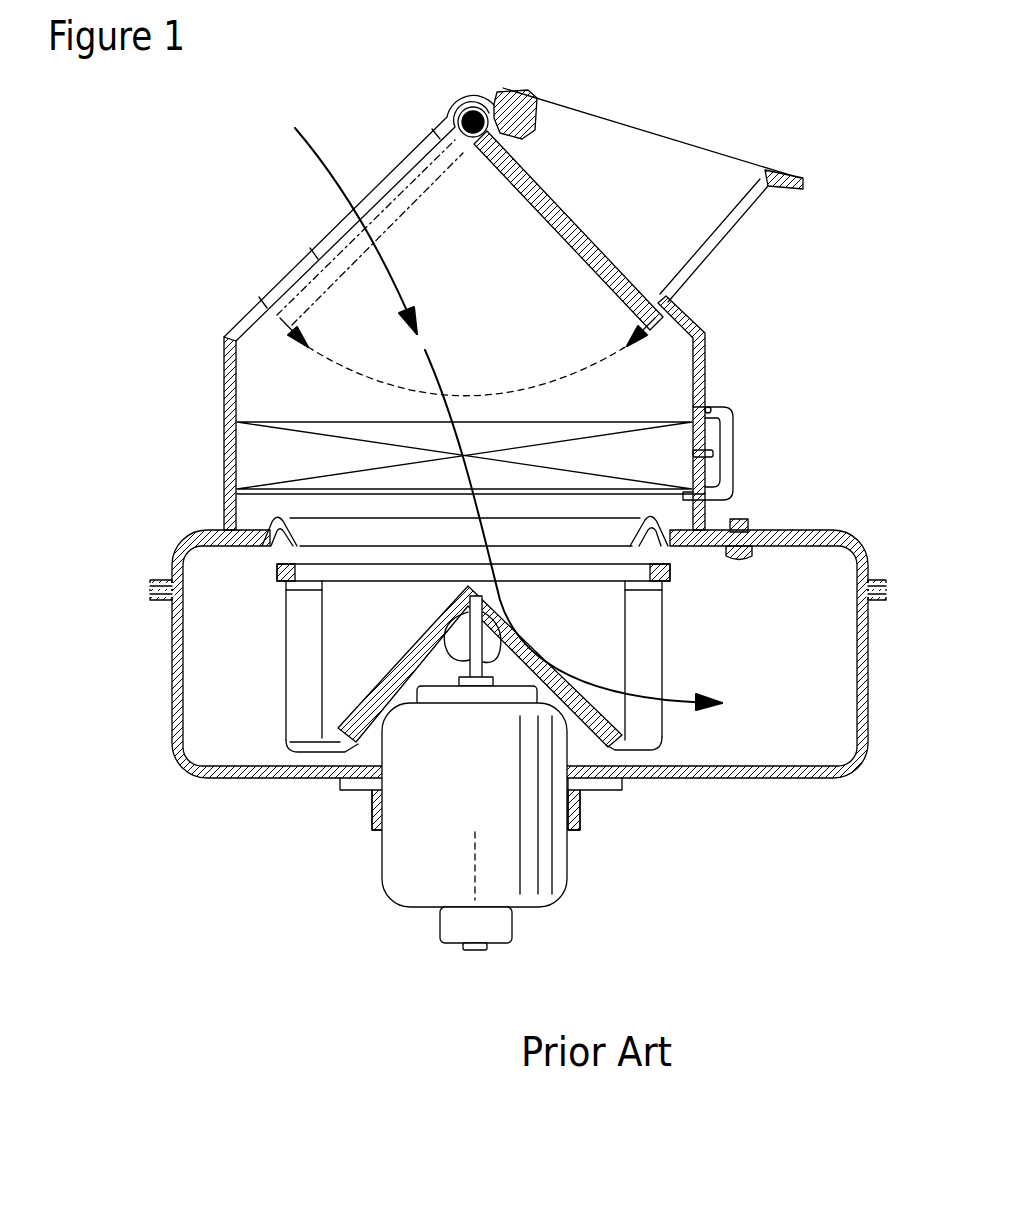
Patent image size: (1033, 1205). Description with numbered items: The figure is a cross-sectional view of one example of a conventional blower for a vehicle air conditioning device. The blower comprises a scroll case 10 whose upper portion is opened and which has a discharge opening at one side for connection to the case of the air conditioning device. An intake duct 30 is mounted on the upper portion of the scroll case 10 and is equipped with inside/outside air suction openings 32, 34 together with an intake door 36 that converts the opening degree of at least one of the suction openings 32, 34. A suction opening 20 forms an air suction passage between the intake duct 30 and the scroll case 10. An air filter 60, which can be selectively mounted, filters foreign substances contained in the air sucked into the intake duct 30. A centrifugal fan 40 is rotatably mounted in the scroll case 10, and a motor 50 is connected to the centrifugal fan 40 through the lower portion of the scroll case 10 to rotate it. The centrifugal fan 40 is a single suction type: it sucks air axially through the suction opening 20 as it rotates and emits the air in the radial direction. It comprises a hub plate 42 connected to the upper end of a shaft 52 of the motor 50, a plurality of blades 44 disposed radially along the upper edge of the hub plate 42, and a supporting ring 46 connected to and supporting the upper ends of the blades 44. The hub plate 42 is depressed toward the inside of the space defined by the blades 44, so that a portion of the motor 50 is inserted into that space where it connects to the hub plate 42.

The scroll case 10 is at (175, 650).
The suction opening 20 is at (275, 519).
The intake duct 30 is at (222, 318).
The inside/outside air suction opening 32 is at (310, 253).
The inside/outside air suction opening 34 is at (627, 140).
The intake door 36 is at (525, 188).
The centrifugal fan 40 is at (287, 735).
The hub plate 42 is at (407, 655).
The blades 44 is at (640, 652).
The supporting ring 46 is at (660, 572).
The motor 50 is at (572, 857).
The shaft 52 is at (432, 625).
The air filter 60 is at (643, 417).